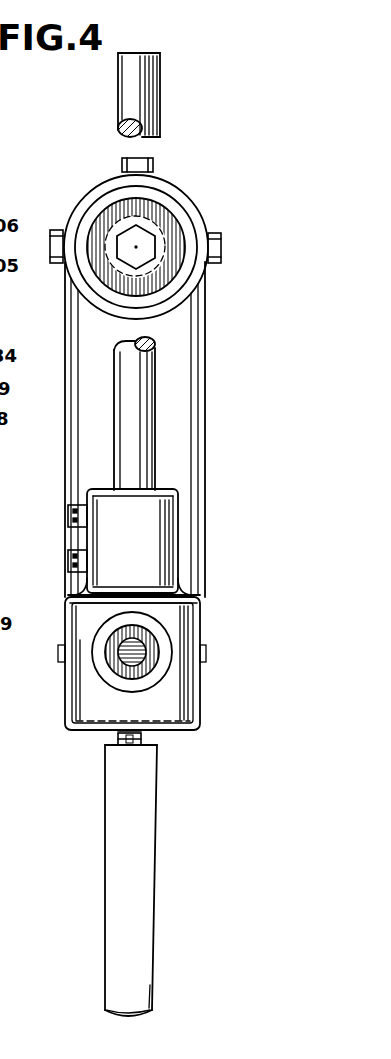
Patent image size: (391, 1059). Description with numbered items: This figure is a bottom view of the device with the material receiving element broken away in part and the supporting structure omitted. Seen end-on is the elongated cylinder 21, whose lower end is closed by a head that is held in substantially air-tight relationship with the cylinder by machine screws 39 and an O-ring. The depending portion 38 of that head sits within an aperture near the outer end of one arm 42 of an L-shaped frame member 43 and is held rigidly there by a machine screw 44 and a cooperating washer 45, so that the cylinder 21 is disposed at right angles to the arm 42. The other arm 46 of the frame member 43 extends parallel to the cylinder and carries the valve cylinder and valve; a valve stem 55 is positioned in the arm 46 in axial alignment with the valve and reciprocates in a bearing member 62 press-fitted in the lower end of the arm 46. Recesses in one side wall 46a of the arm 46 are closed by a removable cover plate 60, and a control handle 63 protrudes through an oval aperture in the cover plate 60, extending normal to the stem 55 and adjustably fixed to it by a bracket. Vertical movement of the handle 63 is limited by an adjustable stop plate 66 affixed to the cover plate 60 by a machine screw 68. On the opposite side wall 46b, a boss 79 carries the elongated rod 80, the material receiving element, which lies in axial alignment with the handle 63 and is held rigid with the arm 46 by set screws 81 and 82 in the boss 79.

The cylinder 21 is at (203, 213).
The depending portion of head 38 is at (146, 226).
The machine screws 39 is at (147, 158).
The arm 42 is at (205, 498).
The L-shaped frame member 43 is at (206, 540).
The machine screw 44 is at (150, 265).
The washer 45 is at (185, 240).
The arm 46 is at (203, 705).
The side wall 46a is at (88, 733).
The side wall 46b is at (150, 594).
The valve stem 55 is at (123, 662).
The cover plate 60 is at (103, 732).
The bearing member 62 is at (152, 665).
The control handle 63 is at (145, 895).
The stop plate 66 is at (145, 740).
The machine screw 68 is at (128, 745).
The boss 79 is at (178, 489).
The rod 80 is at (138, 97).
The set screw 81 is at (68, 515).
The set screw 82 is at (68, 557).